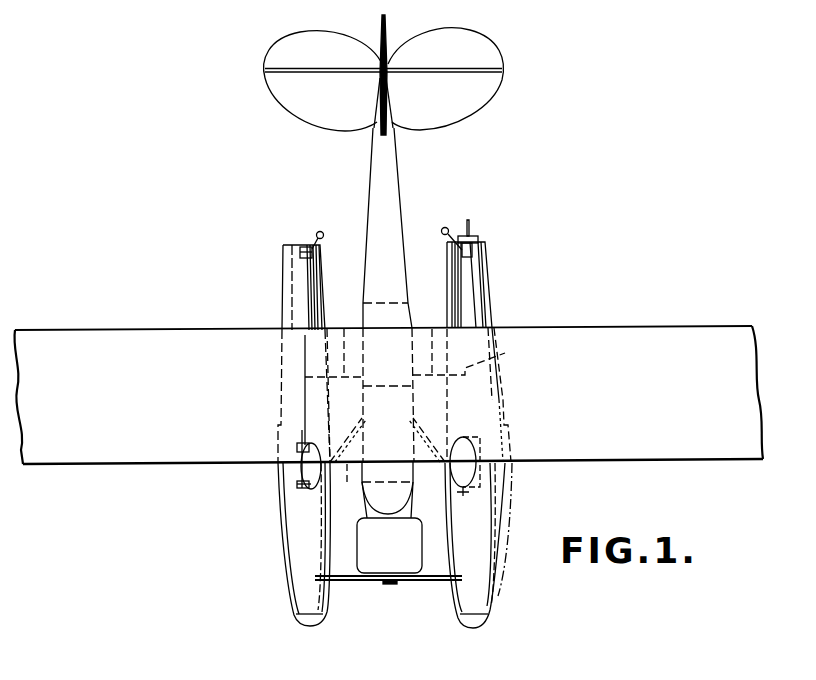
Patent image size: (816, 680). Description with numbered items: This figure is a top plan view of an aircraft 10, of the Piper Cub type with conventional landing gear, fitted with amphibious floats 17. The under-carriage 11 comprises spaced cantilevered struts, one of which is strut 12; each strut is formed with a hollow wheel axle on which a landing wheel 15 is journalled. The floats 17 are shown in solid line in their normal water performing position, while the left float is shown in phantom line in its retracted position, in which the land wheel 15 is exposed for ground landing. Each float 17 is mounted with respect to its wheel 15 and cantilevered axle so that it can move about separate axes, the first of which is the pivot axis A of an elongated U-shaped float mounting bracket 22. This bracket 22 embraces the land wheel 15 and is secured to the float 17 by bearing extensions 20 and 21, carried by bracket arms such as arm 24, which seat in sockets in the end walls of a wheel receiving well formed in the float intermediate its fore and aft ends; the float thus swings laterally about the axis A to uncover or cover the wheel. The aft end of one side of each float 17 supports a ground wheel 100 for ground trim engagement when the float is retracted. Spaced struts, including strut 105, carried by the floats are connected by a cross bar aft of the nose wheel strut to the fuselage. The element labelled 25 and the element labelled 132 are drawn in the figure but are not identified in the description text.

The aircraft 10 is at (545, 321).
The under-carriage 11 is at (274, 539).
The cantilevered strut 12 is at (378, 350).
The landing wheel 15 is at (303, 440).
The amphibious float 17 is at (287, 295).
The bearing extension 20 is at (306, 490).
The bearing extension 21 is at (307, 445).
The float mounting bracket 22 is at (298, 480).
The bracket arm 24 is at (300, 486).
The wheel 25 is at (300, 453).
The ground wheel 100 is at (318, 231).
The strut 105 is at (343, 326).
The mounting bracket 132 is at (305, 350).
The pivot axis A is at (305, 336).